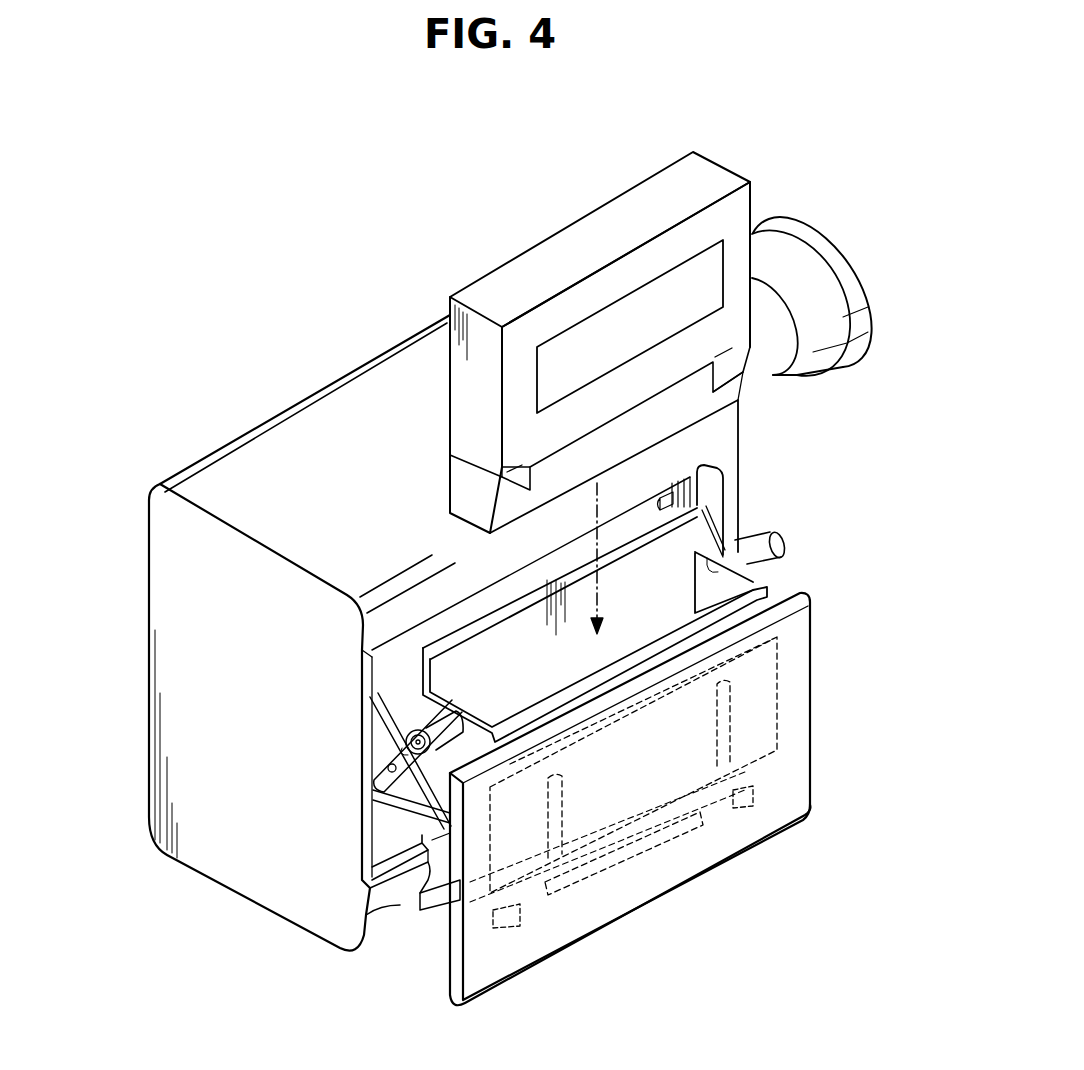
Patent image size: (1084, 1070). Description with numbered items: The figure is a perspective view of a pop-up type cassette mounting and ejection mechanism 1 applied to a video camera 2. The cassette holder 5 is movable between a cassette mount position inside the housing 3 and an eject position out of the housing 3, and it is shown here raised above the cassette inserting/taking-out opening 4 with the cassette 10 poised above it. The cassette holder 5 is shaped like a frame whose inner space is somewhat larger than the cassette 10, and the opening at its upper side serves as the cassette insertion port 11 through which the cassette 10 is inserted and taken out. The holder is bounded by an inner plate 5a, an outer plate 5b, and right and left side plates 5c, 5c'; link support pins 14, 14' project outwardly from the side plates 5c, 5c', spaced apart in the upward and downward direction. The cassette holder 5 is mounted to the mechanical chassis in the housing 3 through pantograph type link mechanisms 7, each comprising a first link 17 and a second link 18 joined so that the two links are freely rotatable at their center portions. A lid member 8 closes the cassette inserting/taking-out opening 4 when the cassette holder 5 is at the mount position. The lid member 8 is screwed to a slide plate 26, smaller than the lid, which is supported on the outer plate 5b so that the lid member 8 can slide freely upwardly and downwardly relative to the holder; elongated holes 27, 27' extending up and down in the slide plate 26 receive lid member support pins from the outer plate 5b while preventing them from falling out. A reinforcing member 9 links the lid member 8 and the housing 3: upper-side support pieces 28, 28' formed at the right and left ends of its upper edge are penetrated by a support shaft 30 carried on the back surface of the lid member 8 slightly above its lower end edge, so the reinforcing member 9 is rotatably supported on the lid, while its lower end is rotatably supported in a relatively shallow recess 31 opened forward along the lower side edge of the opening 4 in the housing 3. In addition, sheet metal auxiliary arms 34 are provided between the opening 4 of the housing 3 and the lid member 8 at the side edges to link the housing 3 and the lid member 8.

The cassette mounting and ejection mechanism 1 is at (383, 824).
The video camera 2 is at (350, 415).
The housing 3 is at (373, 920).
The cassette inserting/taking-out opening 4 is at (450, 632).
The cassette holder 5 is at (778, 588).
The inner plate 5a is at (718, 527).
The outer plate 5b is at (767, 618).
The side plate 5c is at (345, 673).
The side plate 5c' is at (791, 509).
The link mechanism 7 is at (377, 777).
The lid member 8 is at (800, 774).
The reinforcing member 9 is at (433, 897).
The cassette 10 is at (720, 160).
The cassette insertion port 11 is at (622, 620).
The link support pin 14 is at (454, 705).
The link support pin 14' is at (836, 529).
The first link 17 is at (373, 730).
The second link 18 is at (377, 767).
The slide plate 26 is at (817, 712).
The elongated hole 27 is at (598, 804).
The elongated hole 27' is at (823, 703).
The upper-side support piece 28 is at (562, 961).
The upper-side support piece 28' is at (781, 853).
The support shaft 30 is at (637, 857).
The recess 31 is at (413, 882).
The auxiliary arm 34 is at (387, 802).